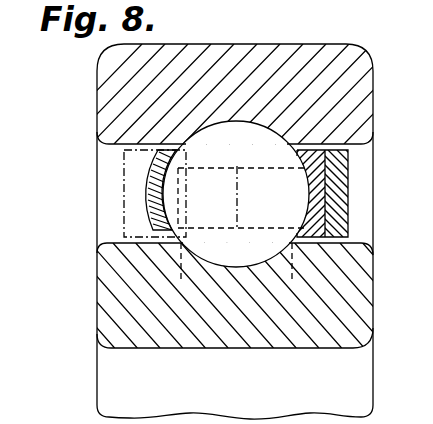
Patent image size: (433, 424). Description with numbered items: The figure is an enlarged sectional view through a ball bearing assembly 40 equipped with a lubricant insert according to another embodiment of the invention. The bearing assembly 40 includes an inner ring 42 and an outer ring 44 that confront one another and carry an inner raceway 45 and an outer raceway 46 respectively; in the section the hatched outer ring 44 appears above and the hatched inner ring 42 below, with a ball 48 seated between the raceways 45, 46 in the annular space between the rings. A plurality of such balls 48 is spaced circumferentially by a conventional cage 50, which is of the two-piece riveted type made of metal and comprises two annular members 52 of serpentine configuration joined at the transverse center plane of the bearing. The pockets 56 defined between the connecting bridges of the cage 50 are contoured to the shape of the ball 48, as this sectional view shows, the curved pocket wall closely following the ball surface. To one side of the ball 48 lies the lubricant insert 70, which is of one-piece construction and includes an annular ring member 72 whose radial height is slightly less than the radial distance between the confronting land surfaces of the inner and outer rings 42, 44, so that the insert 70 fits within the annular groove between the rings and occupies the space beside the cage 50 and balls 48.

The bearing assembly 40 is at (418, 66).
The inner ring 42 is at (106, 283).
The outer ring 44 is at (105, 106).
The inner raceway 45 is at (208, 266).
The outer raceway 46 is at (232, 122).
The balls 48 is at (257, 164).
The cage 50 is at (150, 187).
The annular members 52 is at (153, 168).
The pockets 56 is at (177, 211).
The lubricant insert 70 is at (326, 218).
The annular ring member 72 is at (348, 229).